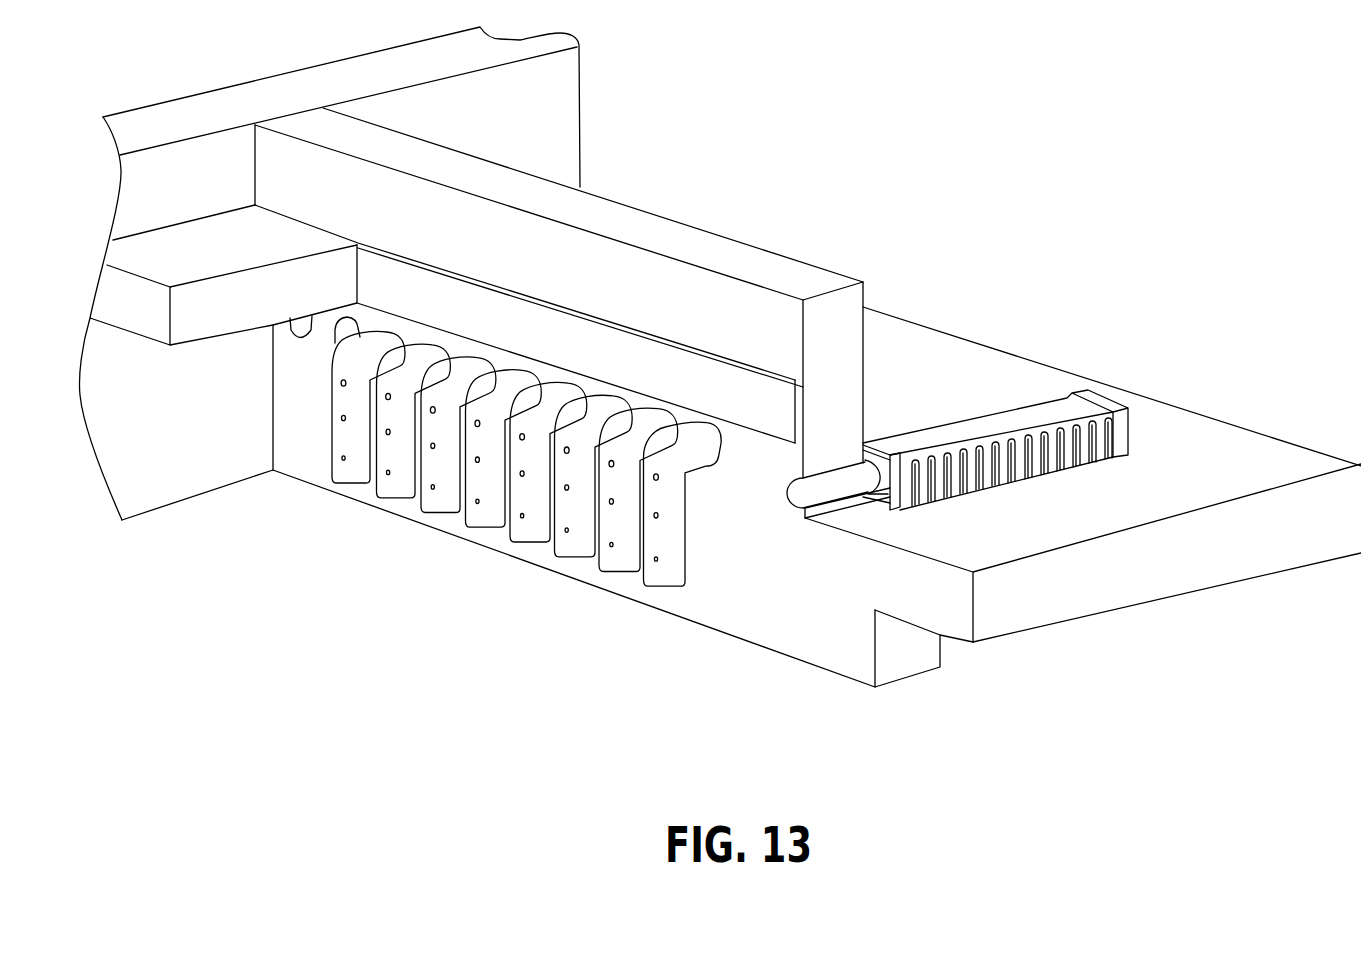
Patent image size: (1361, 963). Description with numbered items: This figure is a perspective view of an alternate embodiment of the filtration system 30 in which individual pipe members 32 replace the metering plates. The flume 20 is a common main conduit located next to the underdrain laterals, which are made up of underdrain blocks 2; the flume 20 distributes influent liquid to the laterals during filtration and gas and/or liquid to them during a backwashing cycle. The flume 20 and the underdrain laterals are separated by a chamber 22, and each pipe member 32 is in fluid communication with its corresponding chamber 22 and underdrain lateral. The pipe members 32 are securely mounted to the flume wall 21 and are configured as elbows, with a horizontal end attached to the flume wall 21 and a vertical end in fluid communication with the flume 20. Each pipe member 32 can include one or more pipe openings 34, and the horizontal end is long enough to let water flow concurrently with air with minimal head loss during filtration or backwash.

The underdrain block 2 is at (1122, 430).
The flume 20 is at (421, 622).
The flume wall 21 is at (683, 427).
The chamber 22 is at (832, 488).
The filtration system 30 is at (897, 399).
The pipe member 32 is at (665, 558).
The pipe opening 34 is at (567, 455).